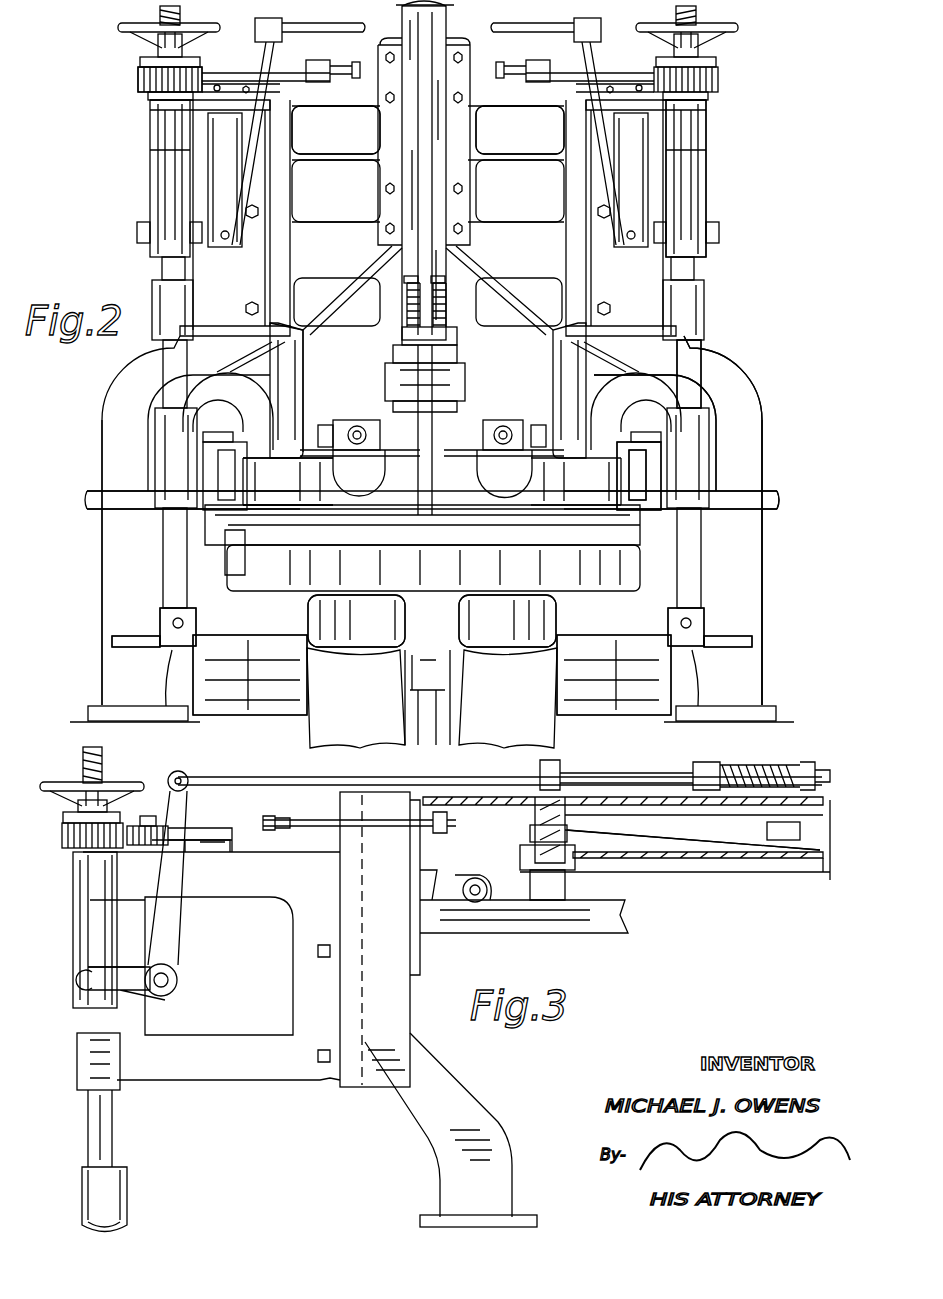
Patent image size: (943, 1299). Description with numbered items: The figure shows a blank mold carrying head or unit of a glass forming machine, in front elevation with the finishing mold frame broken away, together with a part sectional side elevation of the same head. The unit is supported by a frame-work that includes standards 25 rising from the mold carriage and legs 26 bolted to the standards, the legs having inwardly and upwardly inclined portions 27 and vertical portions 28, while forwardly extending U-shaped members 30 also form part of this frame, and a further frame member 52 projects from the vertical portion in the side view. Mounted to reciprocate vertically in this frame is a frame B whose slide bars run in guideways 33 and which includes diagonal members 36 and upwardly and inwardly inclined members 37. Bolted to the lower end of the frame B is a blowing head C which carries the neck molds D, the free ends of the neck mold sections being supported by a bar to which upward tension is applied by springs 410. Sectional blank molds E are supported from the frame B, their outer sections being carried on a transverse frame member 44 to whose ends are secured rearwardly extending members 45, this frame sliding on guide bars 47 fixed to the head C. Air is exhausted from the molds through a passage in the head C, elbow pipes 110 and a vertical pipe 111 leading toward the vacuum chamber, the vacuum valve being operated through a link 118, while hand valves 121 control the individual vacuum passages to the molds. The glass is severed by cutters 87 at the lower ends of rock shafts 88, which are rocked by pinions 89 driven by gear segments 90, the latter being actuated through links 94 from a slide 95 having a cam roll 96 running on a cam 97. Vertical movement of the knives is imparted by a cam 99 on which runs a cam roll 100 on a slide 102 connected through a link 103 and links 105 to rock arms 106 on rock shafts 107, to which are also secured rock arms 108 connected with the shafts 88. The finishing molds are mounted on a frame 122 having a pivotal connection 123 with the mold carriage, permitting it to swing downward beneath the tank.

In FIG. 2, the standards 25 is at (753, 572).
In FIG. 2, the legs 26 is at (748, 455).
In FIG. 3, the legs 26 is at (500, 1178).
In FIG. 2, the inwardly and upwardly inclined portions 27 is at (720, 356).
In FIG. 3, the inwardly and upwardly inclined portions 27 is at (455, 1090).
In FIG. 3, the vertical portions 28 is at (400, 992).
In FIG. 3, the U-shaped members 30 is at (262, 910).
In FIG. 2, the guideways 33 is at (268, 183).
In FIG. 2, the diagonal members 36 is at (518, 152).
In FIG. 2, the upwardly and inwardly inclined members 37 is at (530, 326).
In FIG. 2, the transverse frame member 44 is at (265, 543).
In FIG. 2, the rearwardly extending members 45 is at (205, 535).
In FIG. 2, the guide bars 47 is at (635, 470).
In FIG. 3, the arm 52 is at (560, 925).
In FIG. 2, the cutters 87 is at (142, 632).
In FIG. 2, the rock shafts 88 is at (690, 375).
In FIG. 3, the rock shafts 88 is at (95, 1113).
In FIG. 2, the pinions 89 is at (138, 80).
In FIG. 3, the pinions 89 is at (60, 840).
In FIG. 3, the gear segments 90 is at (155, 800).
In FIG. 3, the links 94 is at (262, 810).
In FIG. 3, the slide 95 is at (520, 797).
In FIG. 3, the cam roll 96 is at (530, 833).
In FIG. 3, the cam 97 is at (520, 855).
In FIG. 3, the cam 99 is at (800, 865).
In FIG. 3, the cam roll 100 is at (767, 828).
In FIG. 3, the slide 102 is at (705, 808).
In FIG. 3, the link 103 is at (650, 772).
In FIG. 2, the links 105 is at (360, 790).
In FIG. 3, the rock arms 106 is at (183, 800).
In FIG. 3, the rock shafts 107 is at (165, 985).
In FIG. 3, the rock arms 108 is at (130, 995).
In FIG. 2, the elbow pipes 110 is at (480, 390).
In FIG. 2, the pipe 111 is at (436, 26).
In FIG. 2, the link 118 is at (440, 9).
In FIG. 2, the hand valves 121 is at (356, 425).
In FIG. 2, the frame 122 is at (420, 742).
In FIG. 2, the pivotal connection 123 is at (268, 700).
In FIG. 2, the springs 410 is at (436, 286).
In FIG. 2, the frame B is at (301, 387).
In FIG. 2, the blowing head C is at (321, 481).
In FIG. 2, the neck molds D is at (433, 568).
In FIG. 2, the blank molds E is at (460, 612).